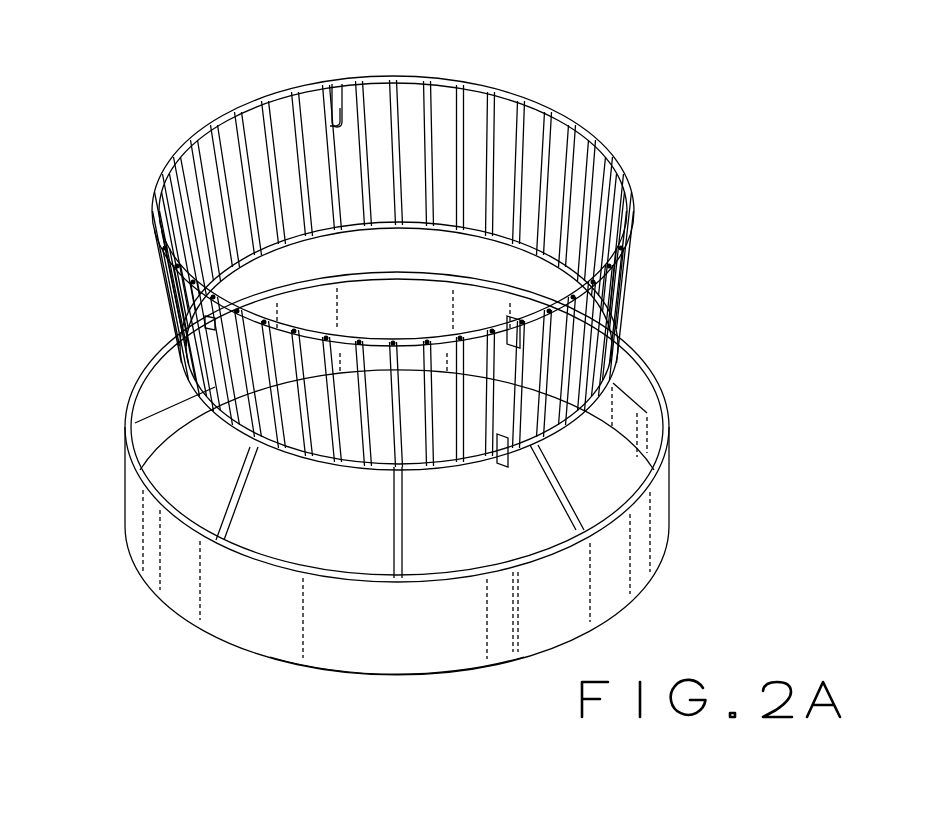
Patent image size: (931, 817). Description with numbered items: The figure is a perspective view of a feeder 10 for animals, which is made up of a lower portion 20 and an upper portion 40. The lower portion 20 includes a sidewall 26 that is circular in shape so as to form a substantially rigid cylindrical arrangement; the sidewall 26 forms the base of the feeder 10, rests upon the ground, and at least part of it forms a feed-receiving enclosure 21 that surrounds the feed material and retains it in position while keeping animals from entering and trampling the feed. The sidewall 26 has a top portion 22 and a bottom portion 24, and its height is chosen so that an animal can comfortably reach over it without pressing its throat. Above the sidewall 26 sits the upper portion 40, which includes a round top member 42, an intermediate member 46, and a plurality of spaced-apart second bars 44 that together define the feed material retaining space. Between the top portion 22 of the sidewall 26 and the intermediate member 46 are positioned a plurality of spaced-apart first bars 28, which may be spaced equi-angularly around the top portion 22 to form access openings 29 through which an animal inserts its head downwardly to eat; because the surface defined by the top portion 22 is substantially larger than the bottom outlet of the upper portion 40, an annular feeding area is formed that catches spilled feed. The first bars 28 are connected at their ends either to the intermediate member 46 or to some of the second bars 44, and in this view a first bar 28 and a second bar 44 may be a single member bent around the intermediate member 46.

The feeder 10 is at (652, 125).
The lower portion 20 is at (98, 442).
The feed-receiving enclosure 21 is at (197, 483).
The top portion 22 is at (600, 590).
The bottom portion 24 is at (573, 637).
The sidewall 26 is at (653, 525).
The first bars 28 is at (568, 442).
The access openings 29 is at (307, 540).
The upper portion 40 is at (147, 272).
The top member 42 is at (630, 177).
The second bars 44 is at (340, 108).
The intermediate member 46 is at (615, 341).